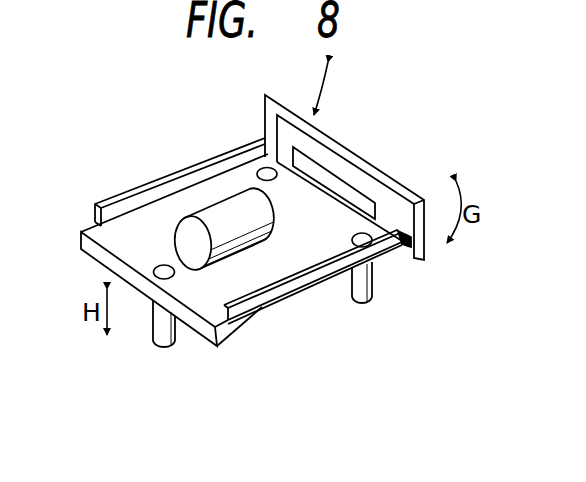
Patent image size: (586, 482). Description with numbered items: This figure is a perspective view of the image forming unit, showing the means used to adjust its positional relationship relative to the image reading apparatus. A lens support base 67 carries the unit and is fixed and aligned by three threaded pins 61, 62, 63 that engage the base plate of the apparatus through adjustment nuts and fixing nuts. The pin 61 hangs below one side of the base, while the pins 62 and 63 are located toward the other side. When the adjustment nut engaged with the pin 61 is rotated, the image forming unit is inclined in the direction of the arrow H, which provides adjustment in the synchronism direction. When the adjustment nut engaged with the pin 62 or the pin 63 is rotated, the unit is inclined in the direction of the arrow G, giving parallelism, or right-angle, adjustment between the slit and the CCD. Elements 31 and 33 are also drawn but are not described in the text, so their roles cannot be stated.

The cylindrical body 31 is at (198, 215).
The pivotable side wall 33 is at (413, 200).
The pin 61 is at (168, 340).
The pin 62 is at (373, 280).
The pin 63 is at (262, 156).
The lens support base 67 is at (260, 280).